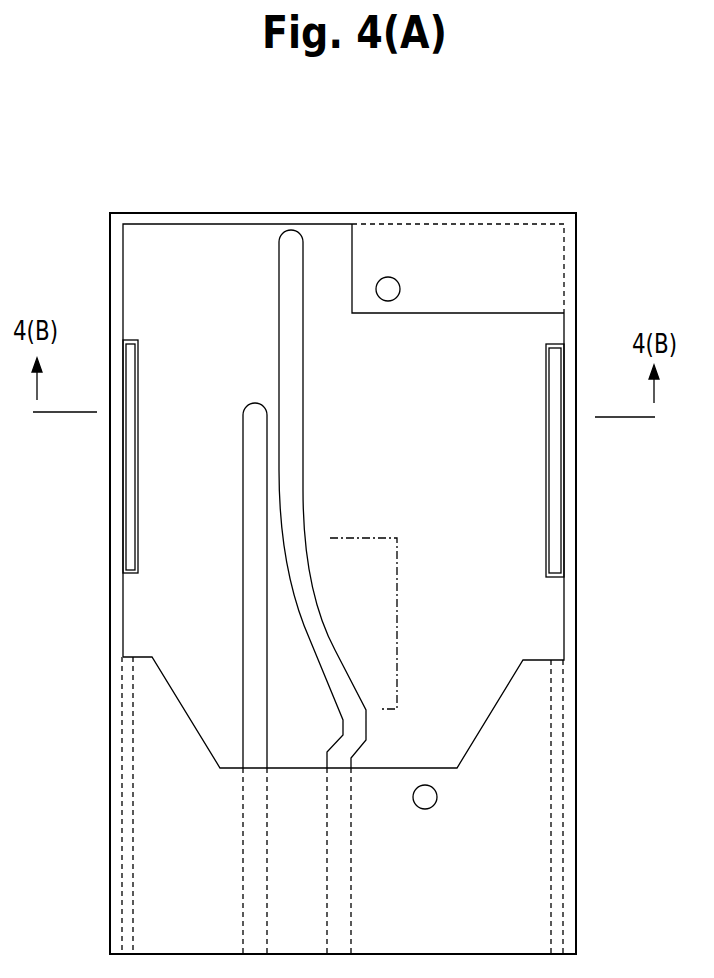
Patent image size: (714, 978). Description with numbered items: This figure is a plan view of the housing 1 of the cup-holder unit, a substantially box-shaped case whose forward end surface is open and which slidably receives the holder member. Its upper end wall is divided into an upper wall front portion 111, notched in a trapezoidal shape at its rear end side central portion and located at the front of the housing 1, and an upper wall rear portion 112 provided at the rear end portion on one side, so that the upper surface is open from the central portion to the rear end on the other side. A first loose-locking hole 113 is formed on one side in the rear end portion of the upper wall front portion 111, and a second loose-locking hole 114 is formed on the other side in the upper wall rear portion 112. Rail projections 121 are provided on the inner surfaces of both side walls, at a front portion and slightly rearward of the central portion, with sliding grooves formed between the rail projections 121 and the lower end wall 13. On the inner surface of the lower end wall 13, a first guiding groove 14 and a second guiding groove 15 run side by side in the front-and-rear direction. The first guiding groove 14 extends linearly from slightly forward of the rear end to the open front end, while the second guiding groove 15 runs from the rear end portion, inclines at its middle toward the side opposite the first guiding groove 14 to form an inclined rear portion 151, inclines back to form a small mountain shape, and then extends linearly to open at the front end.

The housing 1 is at (650, 194).
The lower end wall 13 is at (169, 258).
The first guiding groove 14 is at (243, 619).
The second guiding groove 15 is at (304, 355).
The upper wall front portion 111 is at (513, 845).
The upper wall rear portion 112 is at (496, 244).
The first loose-locking hole 113 is at (437, 797).
The second loose-locking hole 114 is at (384, 277).
The rail projections 121 is at (115, 515).
The inclined rear portion 151 is at (397, 620).